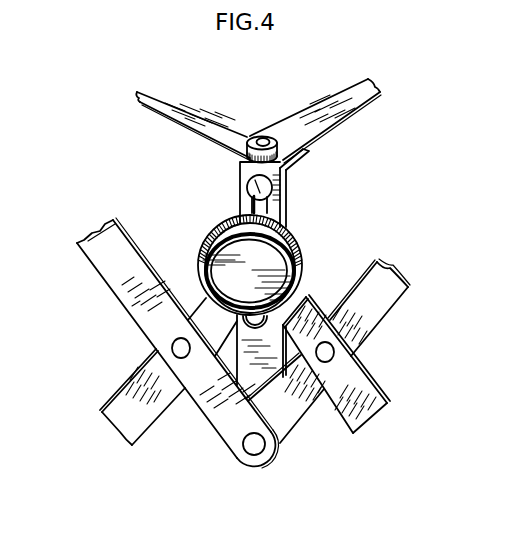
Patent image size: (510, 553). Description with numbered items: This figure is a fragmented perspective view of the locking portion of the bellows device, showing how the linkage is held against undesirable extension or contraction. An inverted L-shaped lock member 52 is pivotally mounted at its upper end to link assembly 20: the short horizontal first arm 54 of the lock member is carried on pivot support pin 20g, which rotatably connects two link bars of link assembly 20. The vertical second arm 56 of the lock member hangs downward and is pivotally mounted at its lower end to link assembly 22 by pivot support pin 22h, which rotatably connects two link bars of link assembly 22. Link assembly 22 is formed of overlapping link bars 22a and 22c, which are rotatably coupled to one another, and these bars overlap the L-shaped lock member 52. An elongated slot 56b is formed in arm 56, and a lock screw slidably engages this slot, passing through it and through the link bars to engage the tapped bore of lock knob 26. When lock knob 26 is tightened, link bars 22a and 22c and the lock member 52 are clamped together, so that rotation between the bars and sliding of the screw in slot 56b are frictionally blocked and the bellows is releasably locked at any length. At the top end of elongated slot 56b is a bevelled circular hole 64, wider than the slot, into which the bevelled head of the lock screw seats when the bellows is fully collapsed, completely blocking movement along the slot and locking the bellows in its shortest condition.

The link assembly 20 is at (320, 97).
The pivot support pin 20g is at (262, 137).
The first arm 54 is at (306, 153).
The L-shaped lock member 52 is at (288, 207).
The circular hole 64 is at (245, 178).
The elongated slot 56b is at (250, 201).
The lock knob 26 is at (199, 272).
The second arm 56 is at (292, 306).
The link assembly 22 is at (313, 407).
The link bar 22a is at (130, 414).
The link bar 22c is at (384, 405).
The pivot support pin 22h is at (257, 442).